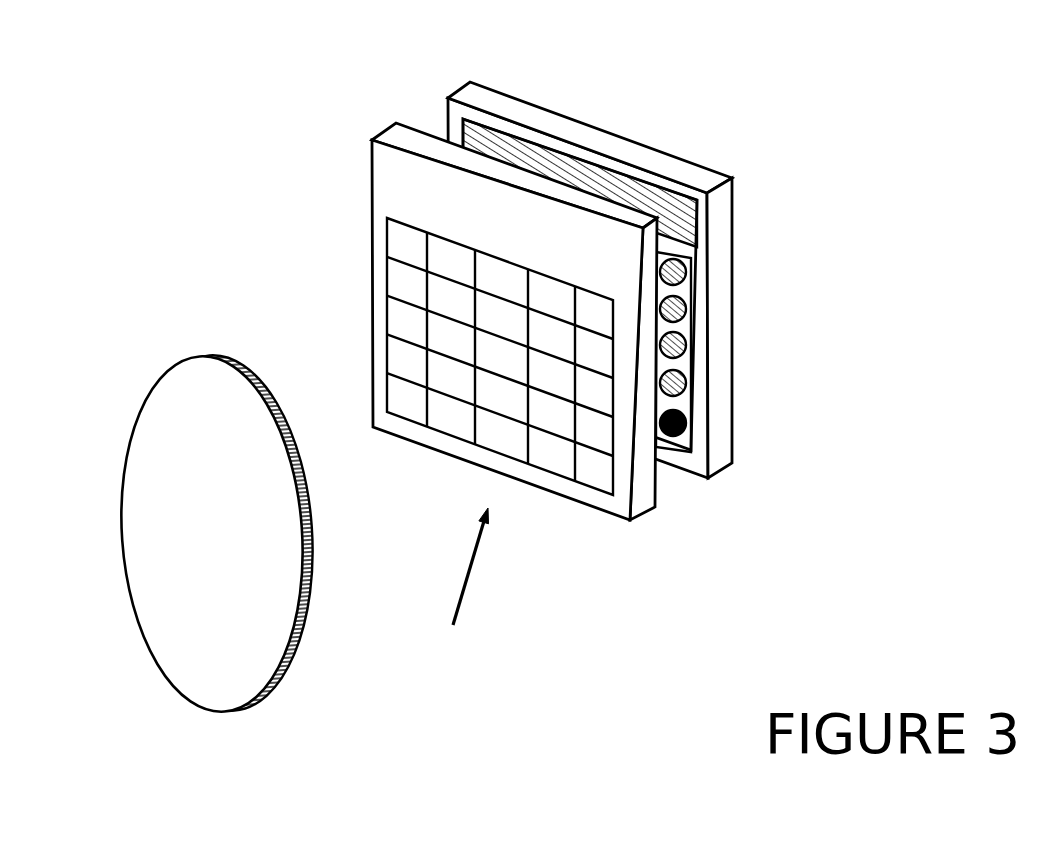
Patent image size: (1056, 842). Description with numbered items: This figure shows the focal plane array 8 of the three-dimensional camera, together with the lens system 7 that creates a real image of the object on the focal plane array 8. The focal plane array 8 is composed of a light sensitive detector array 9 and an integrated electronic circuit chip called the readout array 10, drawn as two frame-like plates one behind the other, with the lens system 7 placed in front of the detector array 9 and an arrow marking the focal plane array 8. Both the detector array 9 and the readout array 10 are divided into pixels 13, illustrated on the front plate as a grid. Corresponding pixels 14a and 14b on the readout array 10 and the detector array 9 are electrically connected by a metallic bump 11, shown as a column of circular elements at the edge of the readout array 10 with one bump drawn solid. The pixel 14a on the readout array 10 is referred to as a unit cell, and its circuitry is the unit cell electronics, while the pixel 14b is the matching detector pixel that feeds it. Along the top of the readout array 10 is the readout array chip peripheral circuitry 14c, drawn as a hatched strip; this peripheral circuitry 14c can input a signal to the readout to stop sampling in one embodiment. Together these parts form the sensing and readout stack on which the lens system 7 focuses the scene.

The lens system 7 is at (180, 697).
The focal plane array 8 is at (465, 591).
The detector array 9 is at (370, 163).
The readout array 10 is at (545, 103).
The metallic bump 11 is at (688, 436).
The pixels 13 is at (387, 221).
The pixel on the readout array 14a is at (687, 315).
The pixel on the detector array 14b is at (687, 385).
The readout array chip peripheral circuitry 14c is at (683, 200).